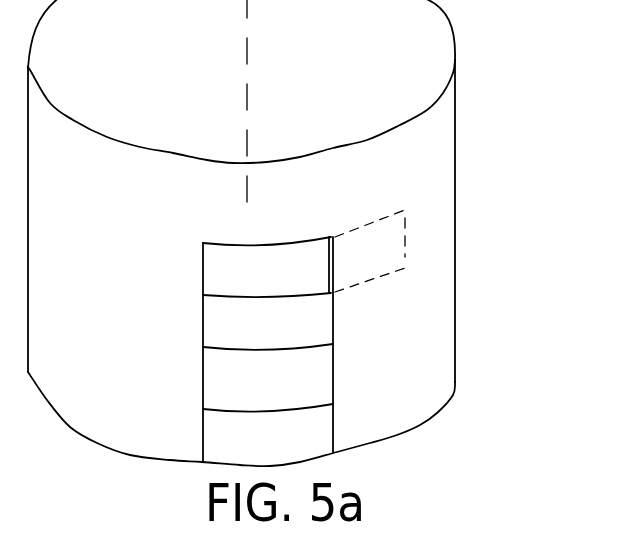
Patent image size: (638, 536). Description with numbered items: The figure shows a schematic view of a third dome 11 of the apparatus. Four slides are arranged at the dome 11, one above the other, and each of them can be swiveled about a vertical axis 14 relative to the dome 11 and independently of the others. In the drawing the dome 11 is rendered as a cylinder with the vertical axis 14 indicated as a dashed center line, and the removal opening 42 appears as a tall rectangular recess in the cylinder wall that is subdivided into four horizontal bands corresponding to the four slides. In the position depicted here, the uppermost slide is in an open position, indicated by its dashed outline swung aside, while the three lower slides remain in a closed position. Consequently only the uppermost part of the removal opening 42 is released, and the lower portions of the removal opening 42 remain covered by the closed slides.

The dome 11 is at (457, 115).
The vertical axis 14 is at (250, 33).
The removal opening 42 is at (226, 268).